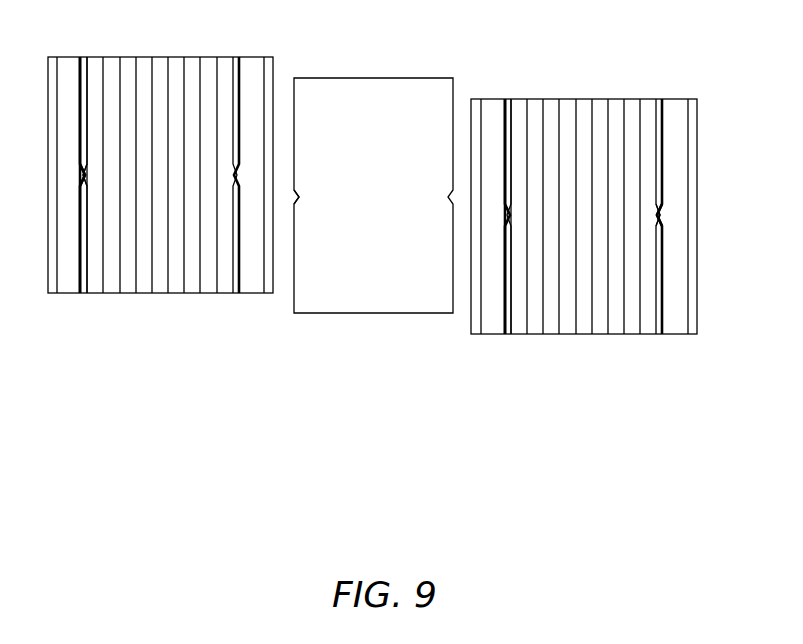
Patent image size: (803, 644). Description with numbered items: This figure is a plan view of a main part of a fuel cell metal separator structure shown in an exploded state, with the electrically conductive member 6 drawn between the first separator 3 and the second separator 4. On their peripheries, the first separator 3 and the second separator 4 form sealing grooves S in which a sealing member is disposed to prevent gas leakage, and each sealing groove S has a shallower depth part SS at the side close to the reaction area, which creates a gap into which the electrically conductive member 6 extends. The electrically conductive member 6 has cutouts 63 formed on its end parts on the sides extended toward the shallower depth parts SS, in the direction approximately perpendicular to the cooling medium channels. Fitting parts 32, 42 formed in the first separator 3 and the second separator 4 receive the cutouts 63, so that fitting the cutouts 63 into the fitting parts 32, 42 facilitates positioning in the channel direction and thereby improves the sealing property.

The first separator 3 is at (157, 57).
The second separator 4 is at (601, 99).
The electrically conductive member 6 is at (375, 78).
The fitting part 32 is at (84, 174).
The fitting part 42 is at (664, 215).
The cutout 63 is at (297, 199).
The sealing groove S is at (81, 54).
The shallower depth part SS is at (87, 53).